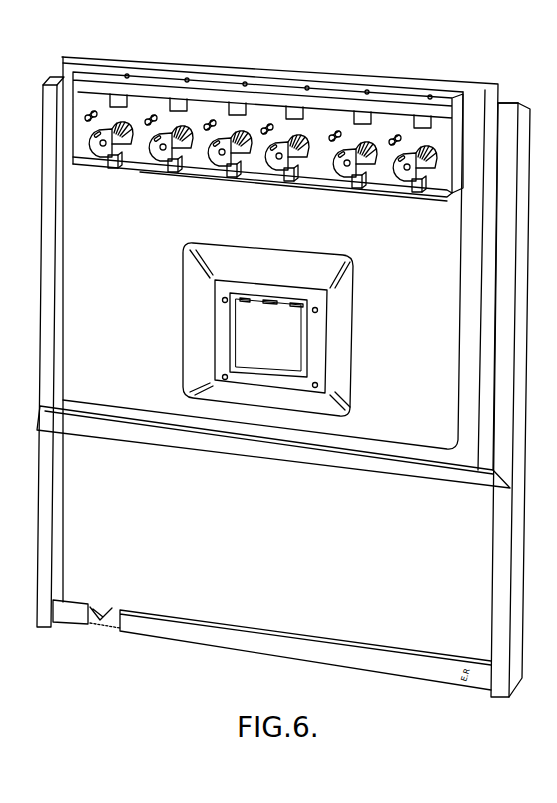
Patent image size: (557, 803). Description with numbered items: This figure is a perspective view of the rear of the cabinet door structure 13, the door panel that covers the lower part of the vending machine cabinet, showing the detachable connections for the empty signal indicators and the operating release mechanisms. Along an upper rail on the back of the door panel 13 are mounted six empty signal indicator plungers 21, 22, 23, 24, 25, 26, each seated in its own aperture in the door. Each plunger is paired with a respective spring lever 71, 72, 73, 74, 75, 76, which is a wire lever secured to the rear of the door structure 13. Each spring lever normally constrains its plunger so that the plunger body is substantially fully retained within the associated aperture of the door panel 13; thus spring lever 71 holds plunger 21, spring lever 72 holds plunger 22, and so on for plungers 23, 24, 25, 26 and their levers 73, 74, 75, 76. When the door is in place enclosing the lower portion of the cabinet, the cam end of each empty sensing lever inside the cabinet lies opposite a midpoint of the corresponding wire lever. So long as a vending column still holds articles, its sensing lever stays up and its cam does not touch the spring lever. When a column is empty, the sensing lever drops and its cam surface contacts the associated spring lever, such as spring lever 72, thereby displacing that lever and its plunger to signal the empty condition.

The cabinet door structure 13 is at (385, 430).
The empty signal indicator plunger 21 is at (394, 137).
The empty signal indicator plunger 22 is at (333, 133).
The empty signal indicator plunger 23 is at (265, 127).
The empty signal indicator plunger 24 is at (208, 123).
The empty signal indicator plunger 25 is at (149, 118).
The empty signal indicator plunger 26 is at (90, 114).
The spring lever 71 is at (416, 122).
The spring lever 72 is at (356, 118).
The spring lever 73 is at (291, 113).
The spring lever 74 is at (233, 110).
The spring lever 75 is at (172, 106).
The spring lever 76 is at (110, 102).